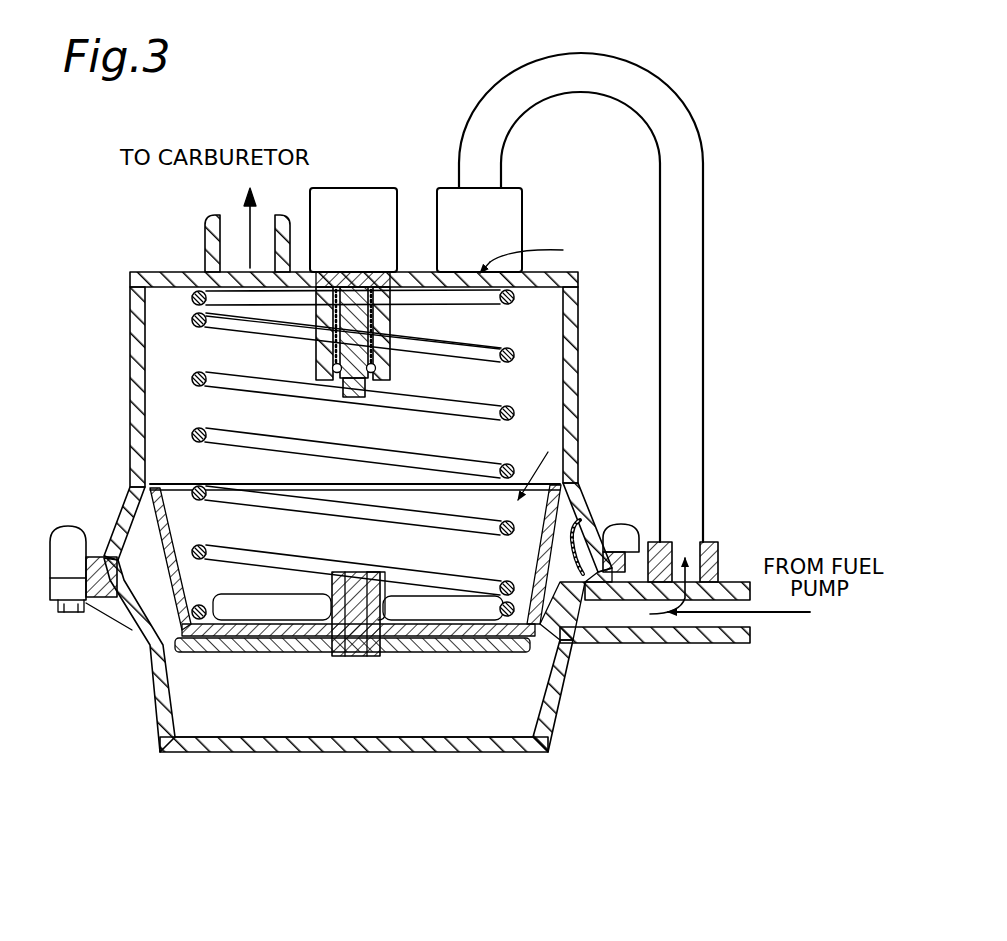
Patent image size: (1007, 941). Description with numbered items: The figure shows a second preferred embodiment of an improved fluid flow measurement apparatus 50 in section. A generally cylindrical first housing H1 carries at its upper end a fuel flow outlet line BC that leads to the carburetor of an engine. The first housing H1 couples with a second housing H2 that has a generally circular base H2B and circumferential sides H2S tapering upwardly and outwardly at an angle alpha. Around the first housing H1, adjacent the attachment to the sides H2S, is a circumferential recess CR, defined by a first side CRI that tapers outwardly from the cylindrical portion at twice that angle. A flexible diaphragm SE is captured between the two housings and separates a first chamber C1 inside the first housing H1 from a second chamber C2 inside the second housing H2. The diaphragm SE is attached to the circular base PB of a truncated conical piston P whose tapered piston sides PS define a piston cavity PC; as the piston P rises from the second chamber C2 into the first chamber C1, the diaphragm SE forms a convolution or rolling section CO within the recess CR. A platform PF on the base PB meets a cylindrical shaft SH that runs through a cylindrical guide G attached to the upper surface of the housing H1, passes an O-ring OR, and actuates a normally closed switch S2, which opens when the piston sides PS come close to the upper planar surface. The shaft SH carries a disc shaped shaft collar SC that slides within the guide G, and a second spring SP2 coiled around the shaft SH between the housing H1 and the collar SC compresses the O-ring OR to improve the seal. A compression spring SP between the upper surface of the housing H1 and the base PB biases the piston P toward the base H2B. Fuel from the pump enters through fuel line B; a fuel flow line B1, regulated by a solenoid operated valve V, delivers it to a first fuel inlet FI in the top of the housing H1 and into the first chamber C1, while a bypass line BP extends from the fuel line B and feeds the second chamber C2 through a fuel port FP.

The fuel flow line B1 is at (702, 222).
The solenoid operated valve V is at (522, 228).
The first fuel inlet FI is at (535, 253).
The normally closed switch S2 is at (395, 175).
The fuel flow outlet line BC is at (214, 230).
The first housing H1 is at (130, 345).
The circumferential recess CR is at (137, 478).
The piston sides PS is at (577, 486).
The first side CRI is at (116, 515).
The convolution or rolling section CO is at (585, 520).
The piston P is at (183, 463).
The flexible diaphragm SE is at (172, 640).
The piston base PB is at (288, 652).
The platform PF is at (386, 575).
The guide G is at (388, 334).
The second spring SP2 is at (320, 336).
The compression spring SP is at (232, 328).
The shaft collar SC is at (320, 366).
The shaft SH is at (356, 398).
The O-ring OR is at (390, 376).
The first chamber C1 is at (353, 454).
The piston cavity PC is at (530, 463).
The circumferential sides H2S is at (154, 690).
The base H2B is at (345, 752).
The second housing H2 is at (560, 722).
The second chamber C2 is at (354, 709).
The fuel port FP is at (573, 620).
The bypass line BP is at (622, 622).
The fuel line B is at (730, 618).
The fluid flow measurement apparatus 50 is at (157, 766).